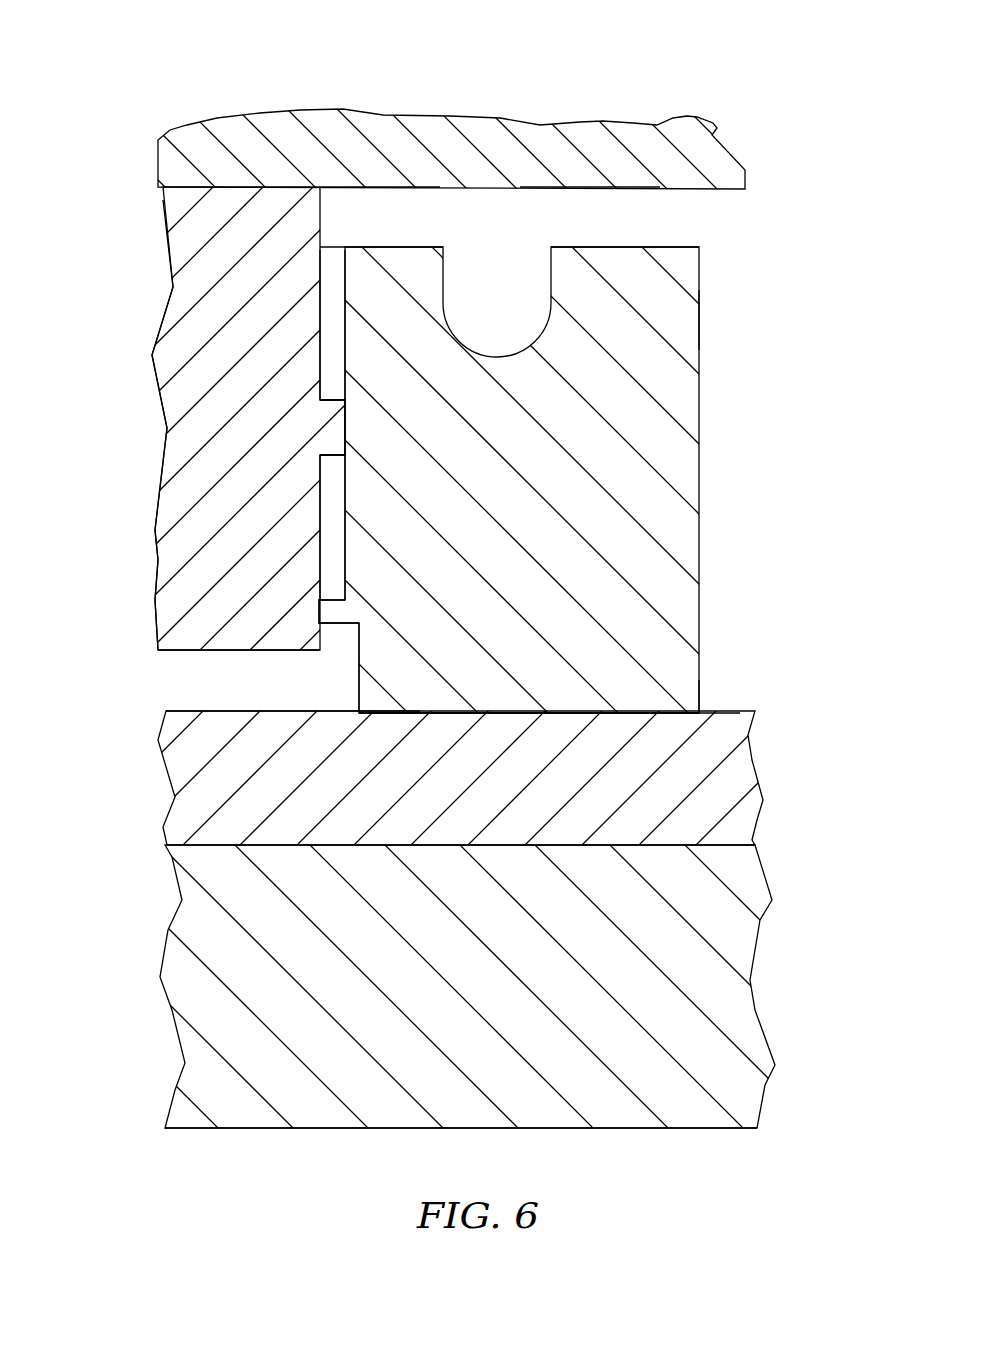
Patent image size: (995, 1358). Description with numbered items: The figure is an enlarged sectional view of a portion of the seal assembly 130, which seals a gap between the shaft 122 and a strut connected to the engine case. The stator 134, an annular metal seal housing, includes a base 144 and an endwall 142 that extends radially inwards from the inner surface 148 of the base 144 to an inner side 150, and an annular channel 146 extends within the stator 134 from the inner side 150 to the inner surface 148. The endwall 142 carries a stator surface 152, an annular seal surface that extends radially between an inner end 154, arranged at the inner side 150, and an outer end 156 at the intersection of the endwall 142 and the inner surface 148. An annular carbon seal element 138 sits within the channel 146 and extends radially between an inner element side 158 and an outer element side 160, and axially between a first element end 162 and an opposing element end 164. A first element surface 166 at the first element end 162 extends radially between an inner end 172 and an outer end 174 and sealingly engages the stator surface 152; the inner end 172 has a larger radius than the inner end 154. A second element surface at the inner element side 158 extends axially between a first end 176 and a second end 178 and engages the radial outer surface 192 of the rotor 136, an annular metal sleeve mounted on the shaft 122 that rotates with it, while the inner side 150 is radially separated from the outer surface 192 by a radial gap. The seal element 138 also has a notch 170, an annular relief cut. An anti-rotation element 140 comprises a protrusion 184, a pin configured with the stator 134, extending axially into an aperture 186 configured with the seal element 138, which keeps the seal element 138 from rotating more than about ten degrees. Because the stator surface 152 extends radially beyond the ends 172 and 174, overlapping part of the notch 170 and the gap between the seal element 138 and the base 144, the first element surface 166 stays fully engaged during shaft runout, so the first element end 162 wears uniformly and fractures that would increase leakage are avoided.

The seal assembly 130 is at (150, 73).
The base 144 is at (511, 135).
The stator 134 is at (162, 238).
The endwall 142 is at (158, 505).
The seal element 138 is at (703, 420).
The element end 164 is at (703, 320).
The outer element side 160 is at (652, 247).
The outer end 174 is at (320, 247).
The outer end 156 is at (320, 187).
The inner surface 148 is at (555, 190).
The annular channel 146 is at (750, 212).
The stator surface 152 is at (320, 310).
The element end 162 is at (320, 333).
The protrusion 184 is at (337, 417).
The anti-rotation element 140 is at (294, 426).
The aperture 186 is at (316, 474).
The first element surface 166 is at (320, 560).
The inner end 172 is at (320, 601).
The inner end 154 is at (320, 643).
The inner side 150 is at (183, 650).
The notch 170 is at (316, 680).
The radial outer surface 192 is at (190, 712).
The first end 176 is at (354, 712).
The second end 178 is at (699, 713).
The inner element side 158 is at (630, 717).
The rotor 136 is at (743, 778).
The shaft 122 is at (728, 988).